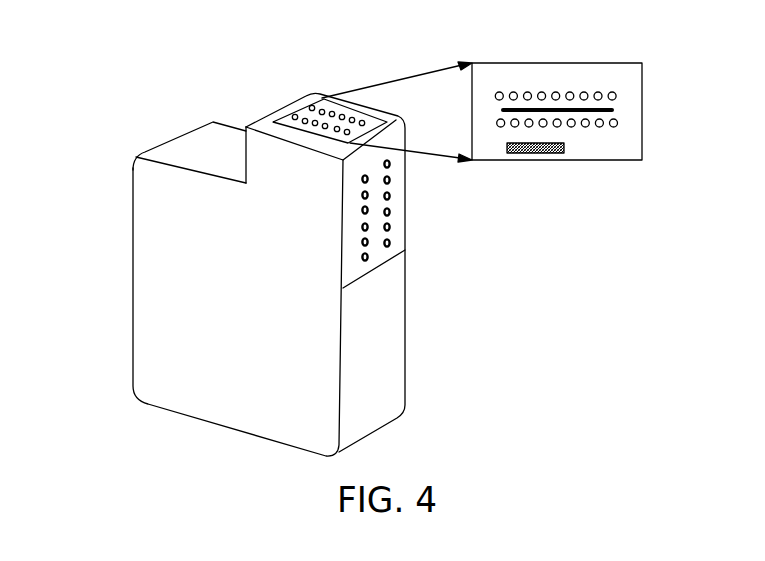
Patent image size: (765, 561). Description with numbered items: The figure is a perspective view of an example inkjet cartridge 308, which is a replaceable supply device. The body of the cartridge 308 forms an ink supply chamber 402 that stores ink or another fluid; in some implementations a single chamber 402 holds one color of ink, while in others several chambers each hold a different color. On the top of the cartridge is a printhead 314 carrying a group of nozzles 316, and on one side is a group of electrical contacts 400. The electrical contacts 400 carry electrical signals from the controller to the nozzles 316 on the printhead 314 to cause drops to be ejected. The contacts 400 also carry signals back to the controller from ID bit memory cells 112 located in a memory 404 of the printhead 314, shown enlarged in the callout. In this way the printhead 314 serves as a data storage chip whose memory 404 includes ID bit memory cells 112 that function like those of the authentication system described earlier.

The inkjet cartridge 308 is at (143, 62).
The ink supply chamber 402 is at (147, 273).
The electrical contacts 400 is at (400, 221).
The printhead 314 is at (317, 133).
The nozzles 316 is at (320, 107).
The memory 404 is at (528, 152).
The ID bit memory cells 112 is at (606, 189).